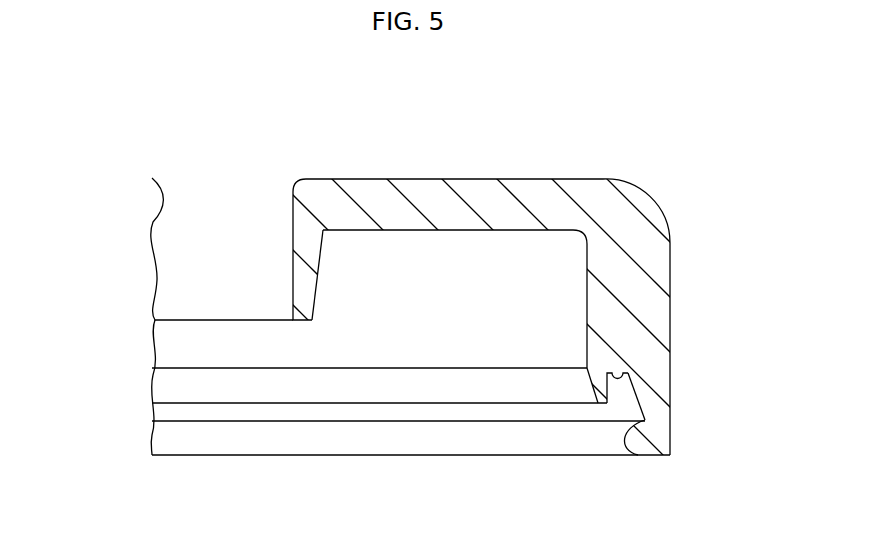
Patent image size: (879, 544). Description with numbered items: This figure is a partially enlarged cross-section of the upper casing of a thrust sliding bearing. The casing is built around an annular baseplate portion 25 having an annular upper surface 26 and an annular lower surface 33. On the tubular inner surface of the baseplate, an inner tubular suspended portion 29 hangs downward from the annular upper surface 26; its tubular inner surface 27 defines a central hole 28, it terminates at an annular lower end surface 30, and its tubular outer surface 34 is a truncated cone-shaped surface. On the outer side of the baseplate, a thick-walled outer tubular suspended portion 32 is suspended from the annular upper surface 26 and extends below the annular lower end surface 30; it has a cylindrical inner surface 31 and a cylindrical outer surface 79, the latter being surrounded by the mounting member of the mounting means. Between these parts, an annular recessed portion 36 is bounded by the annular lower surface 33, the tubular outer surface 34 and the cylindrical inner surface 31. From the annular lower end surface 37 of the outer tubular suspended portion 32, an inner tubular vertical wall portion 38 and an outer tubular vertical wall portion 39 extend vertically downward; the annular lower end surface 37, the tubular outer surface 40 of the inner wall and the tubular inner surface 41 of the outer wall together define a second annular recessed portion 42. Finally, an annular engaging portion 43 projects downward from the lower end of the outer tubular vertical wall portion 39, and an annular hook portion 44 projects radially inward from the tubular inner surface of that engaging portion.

The annular baseplate portion 25 is at (473, 192).
The annular upper surface 26 is at (275, 178).
The tubular inner surface 27 is at (207, 200).
The central hole 28 is at (175, 282).
The inner tubular suspended portion 29 is at (305, 238).
The annular lower end surface 30 is at (185, 322).
The cylindrical inner surface 31 is at (587, 288).
The outer tubular suspended portion 32 is at (643, 310).
The annular lower surface 33 is at (393, 235).
The tubular outer surface 34 is at (320, 260).
The annular recessed portion 36 is at (533, 253).
The annular lower end surface 37 is at (623, 368).
The inner tubular vertical wall portion 38 is at (596, 402).
The outer tubular vertical wall portion 39 is at (653, 413).
The tubular outer surface 40 is at (613, 388).
The tubular inner surface 41 is at (637, 388).
The annular recessed portion 42 is at (648, 426).
The annular engaging portion 43 is at (660, 443).
The annular hook portion 44 is at (636, 447).
The cylindrical outer surface 79 is at (670, 288).